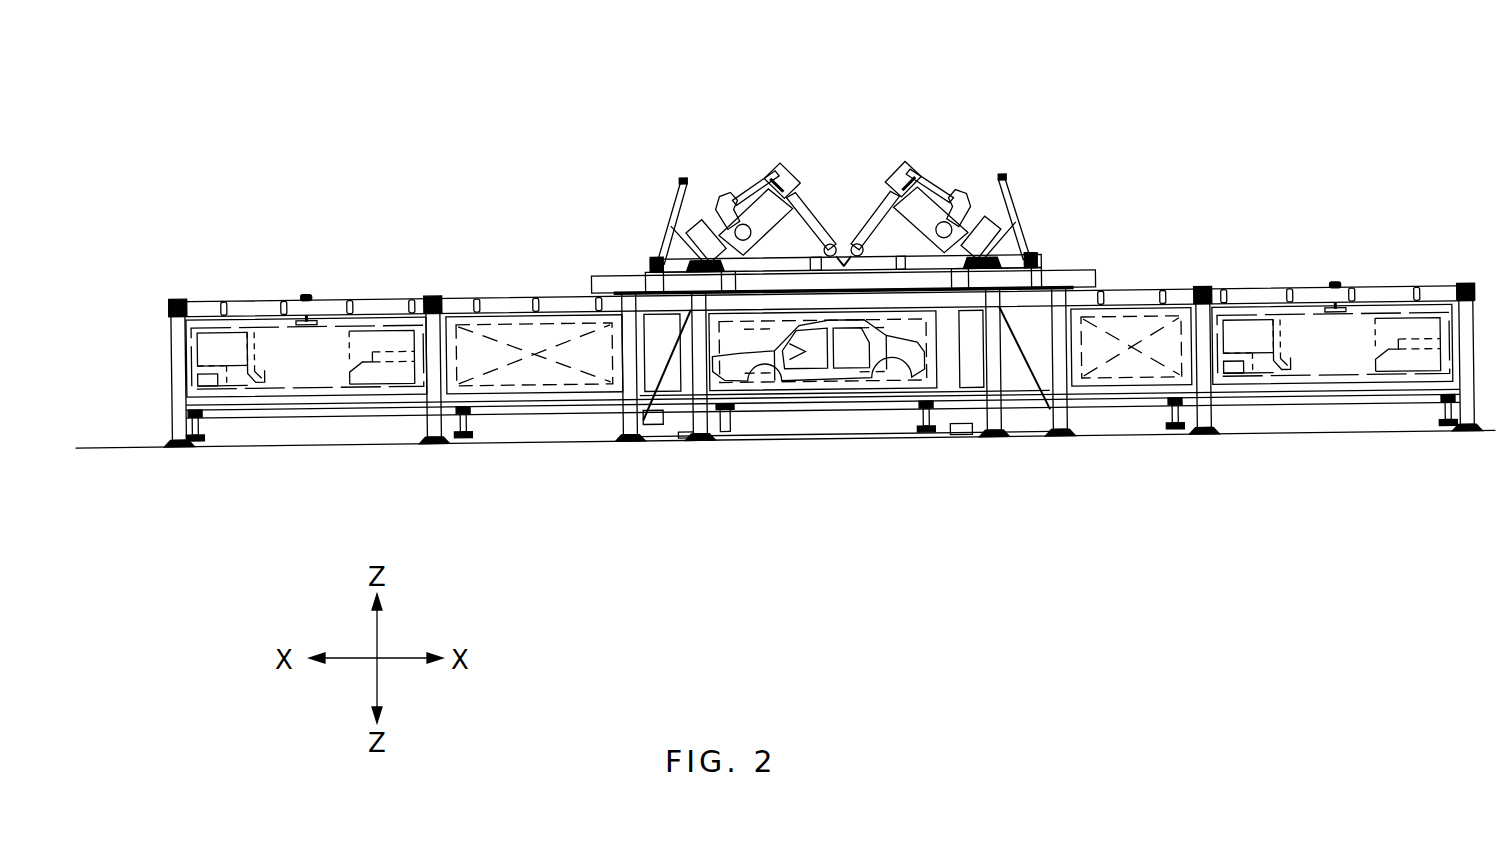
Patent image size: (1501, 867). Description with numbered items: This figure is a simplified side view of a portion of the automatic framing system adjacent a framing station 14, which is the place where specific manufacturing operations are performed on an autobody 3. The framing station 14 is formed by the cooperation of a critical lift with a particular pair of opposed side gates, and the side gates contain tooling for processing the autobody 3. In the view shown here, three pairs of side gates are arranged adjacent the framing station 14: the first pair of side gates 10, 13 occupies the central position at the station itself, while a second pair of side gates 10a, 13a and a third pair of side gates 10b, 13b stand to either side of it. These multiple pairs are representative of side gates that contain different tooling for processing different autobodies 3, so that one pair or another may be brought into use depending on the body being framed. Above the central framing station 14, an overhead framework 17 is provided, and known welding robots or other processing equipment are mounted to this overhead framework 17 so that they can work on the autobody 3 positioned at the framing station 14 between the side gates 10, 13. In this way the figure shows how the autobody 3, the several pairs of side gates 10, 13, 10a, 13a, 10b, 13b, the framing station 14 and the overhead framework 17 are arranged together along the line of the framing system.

The autobody 3 is at (791, 314).
The side gate 10 is at (870, 219).
The side gate 13 is at (893, 305).
The side gate 10a is at (514, 258).
The side gate 13a is at (516, 312).
The side gate 10b is at (1161, 213).
The side gate 13b is at (1140, 300).
The framing station 14 is at (843, 140).
The overhead framework 17 is at (553, 303).